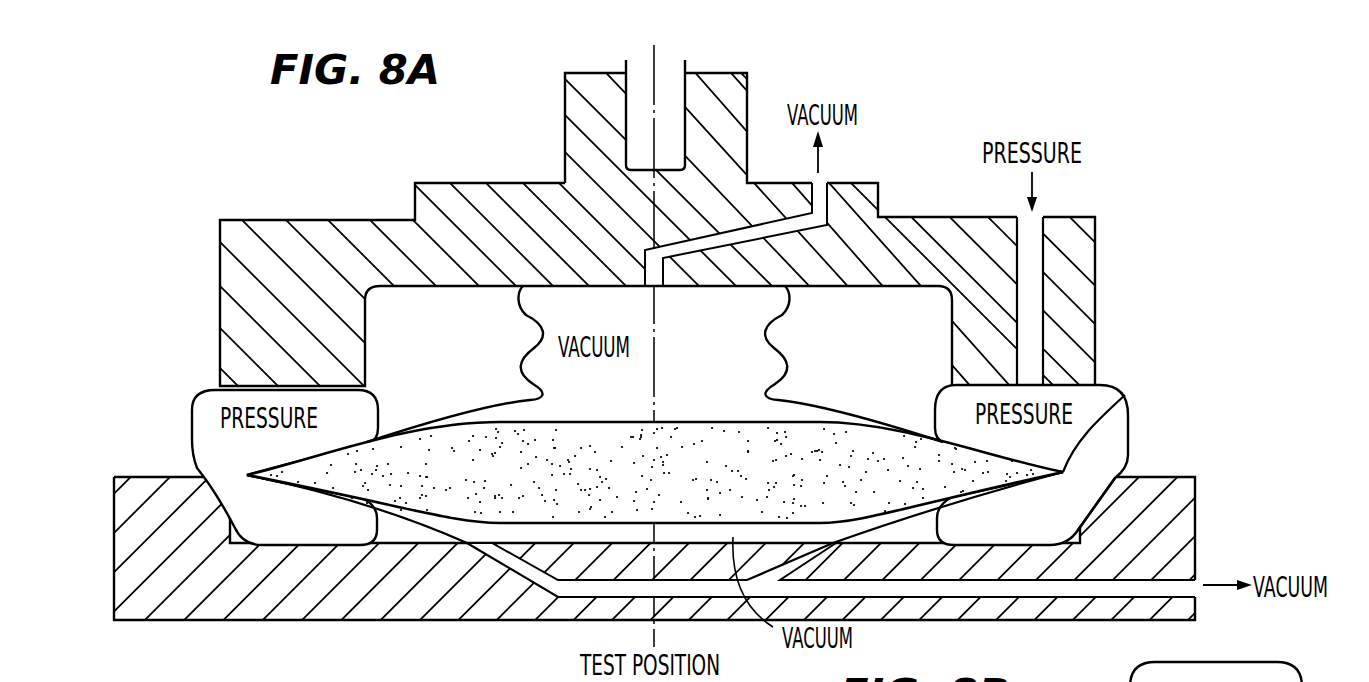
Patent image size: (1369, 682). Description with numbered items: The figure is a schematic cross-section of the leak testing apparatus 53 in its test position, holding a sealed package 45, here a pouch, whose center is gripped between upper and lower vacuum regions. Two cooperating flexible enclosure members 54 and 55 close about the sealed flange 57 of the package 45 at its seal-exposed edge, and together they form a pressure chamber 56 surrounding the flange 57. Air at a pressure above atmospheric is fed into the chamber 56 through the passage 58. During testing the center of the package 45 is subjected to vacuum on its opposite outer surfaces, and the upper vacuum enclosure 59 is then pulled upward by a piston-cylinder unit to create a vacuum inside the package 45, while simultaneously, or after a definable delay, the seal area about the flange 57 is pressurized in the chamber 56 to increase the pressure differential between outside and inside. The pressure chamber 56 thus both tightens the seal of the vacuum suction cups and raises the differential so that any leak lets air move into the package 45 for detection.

The sealed package 45 is at (483, 507).
The apparatus 53 is at (236, 175).
The flexible enclosure member 54 is at (1130, 421).
The flexible enclosure member 55 is at (1090, 515).
The pressure chamber 56 is at (1097, 452).
The sealed flange 57 is at (1125, 395).
The passage 58 is at (1035, 293).
The upper vacuum enclosure 59 is at (493, 402).